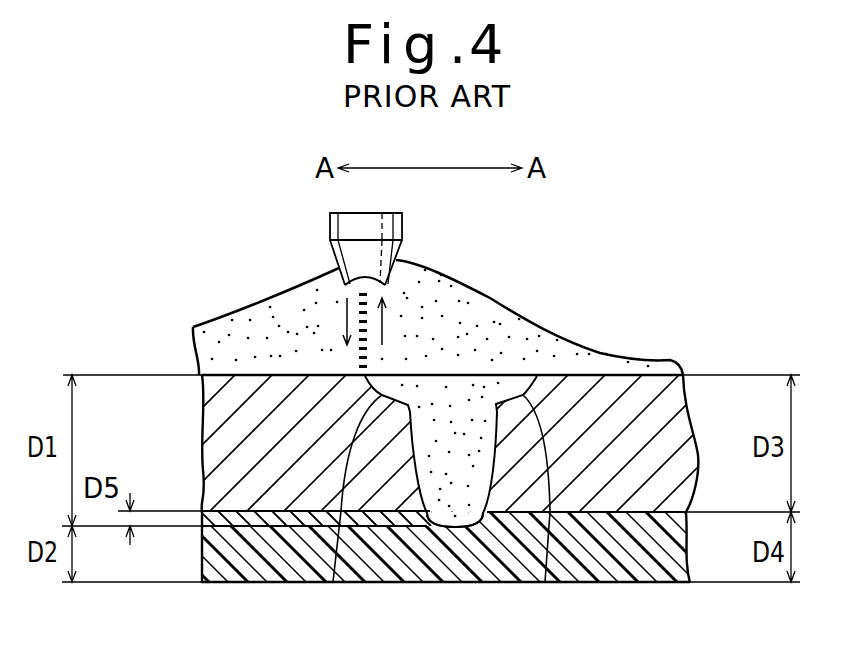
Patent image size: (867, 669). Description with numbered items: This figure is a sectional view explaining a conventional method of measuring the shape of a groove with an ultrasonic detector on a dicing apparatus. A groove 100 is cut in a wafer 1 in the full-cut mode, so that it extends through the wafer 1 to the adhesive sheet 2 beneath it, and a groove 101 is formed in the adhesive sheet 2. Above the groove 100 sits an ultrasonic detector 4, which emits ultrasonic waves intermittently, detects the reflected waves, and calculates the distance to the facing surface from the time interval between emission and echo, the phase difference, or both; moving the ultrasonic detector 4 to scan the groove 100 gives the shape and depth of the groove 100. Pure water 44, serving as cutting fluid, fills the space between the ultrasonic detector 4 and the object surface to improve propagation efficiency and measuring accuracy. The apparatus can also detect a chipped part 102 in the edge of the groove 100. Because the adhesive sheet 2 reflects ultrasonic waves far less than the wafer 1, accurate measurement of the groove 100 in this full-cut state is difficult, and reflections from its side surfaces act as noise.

The wafer 1 is at (660, 385).
The adhesive sheet 2 is at (653, 568).
The ultrasonic detector 4 is at (402, 226).
The pure water 44 is at (503, 307).
The groove 100 is at (445, 468).
The groove formed in the adhesive sheet 101 is at (460, 524).
The chipped part 102 is at (548, 598).